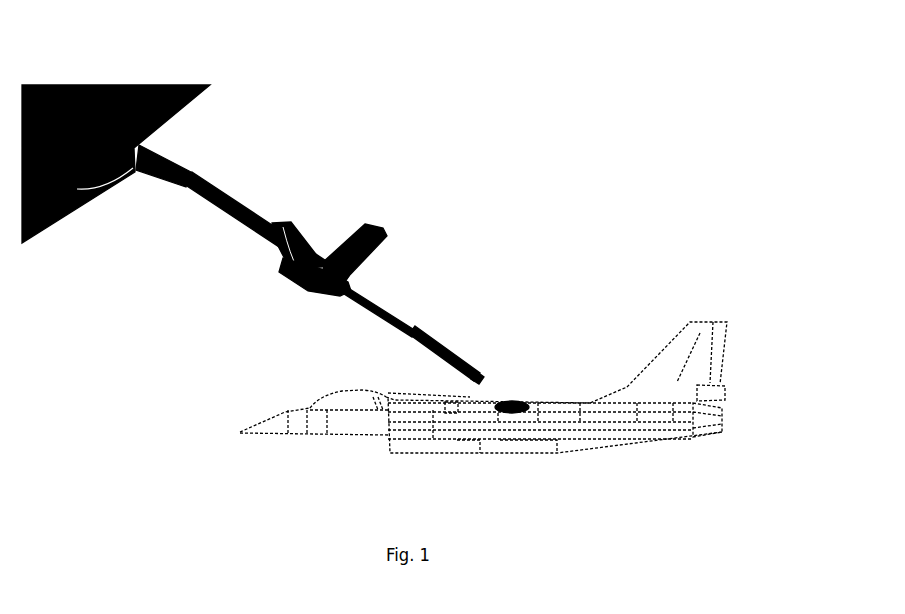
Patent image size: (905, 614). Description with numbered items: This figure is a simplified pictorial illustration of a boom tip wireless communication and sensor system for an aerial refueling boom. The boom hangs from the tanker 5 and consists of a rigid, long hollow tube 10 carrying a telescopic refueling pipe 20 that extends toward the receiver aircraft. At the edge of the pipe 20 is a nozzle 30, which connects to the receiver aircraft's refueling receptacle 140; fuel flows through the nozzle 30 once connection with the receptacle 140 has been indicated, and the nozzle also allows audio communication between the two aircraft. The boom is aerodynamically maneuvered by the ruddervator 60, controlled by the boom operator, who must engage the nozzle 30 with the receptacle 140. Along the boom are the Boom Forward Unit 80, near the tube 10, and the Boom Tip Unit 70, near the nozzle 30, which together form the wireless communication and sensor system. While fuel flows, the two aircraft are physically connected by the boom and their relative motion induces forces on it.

The tanker 5 is at (90, 130).
The hollow tube 10 is at (220, 195).
The ruddervator 60 is at (415, 172).
The Boom Forward Unit 80 is at (345, 280).
The telescopic refueling pipe 20 is at (413, 330).
The Boom Tip Unit 70 is at (472, 367).
The nozzle 30 is at (483, 374).
The refueling receptacle 140 is at (483, 400).